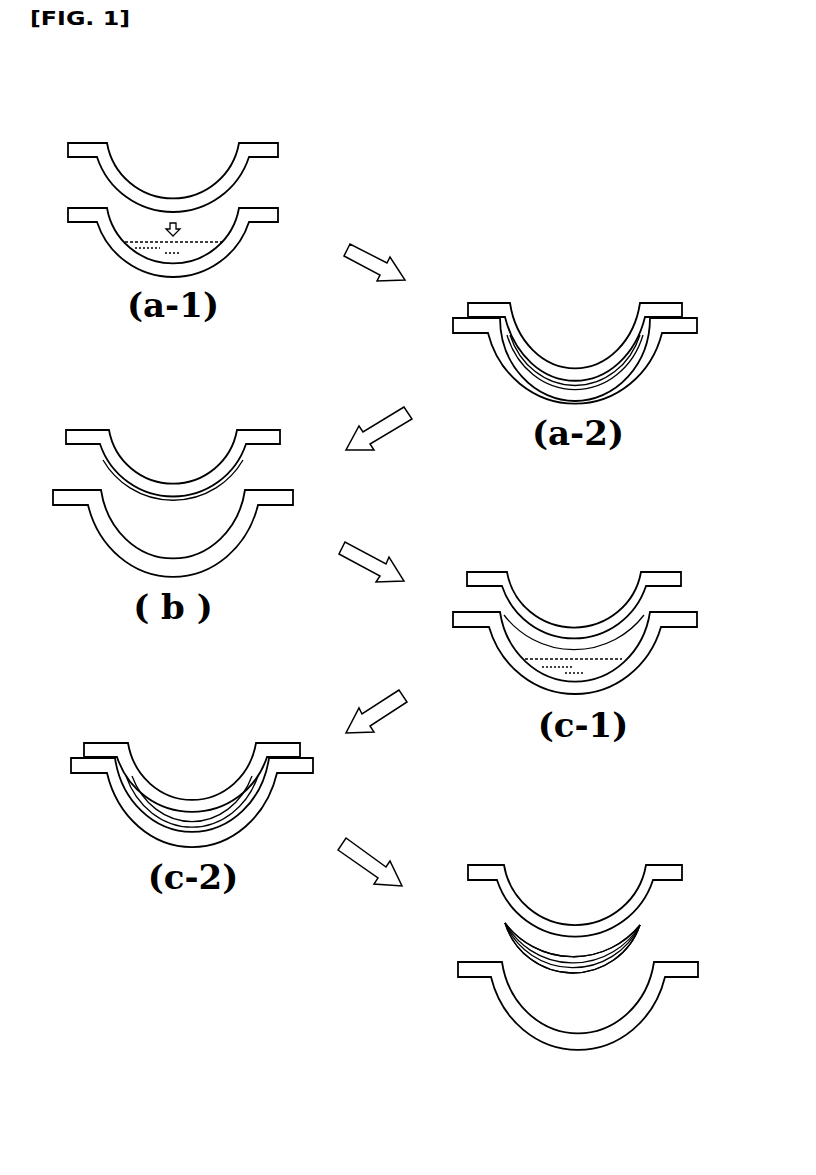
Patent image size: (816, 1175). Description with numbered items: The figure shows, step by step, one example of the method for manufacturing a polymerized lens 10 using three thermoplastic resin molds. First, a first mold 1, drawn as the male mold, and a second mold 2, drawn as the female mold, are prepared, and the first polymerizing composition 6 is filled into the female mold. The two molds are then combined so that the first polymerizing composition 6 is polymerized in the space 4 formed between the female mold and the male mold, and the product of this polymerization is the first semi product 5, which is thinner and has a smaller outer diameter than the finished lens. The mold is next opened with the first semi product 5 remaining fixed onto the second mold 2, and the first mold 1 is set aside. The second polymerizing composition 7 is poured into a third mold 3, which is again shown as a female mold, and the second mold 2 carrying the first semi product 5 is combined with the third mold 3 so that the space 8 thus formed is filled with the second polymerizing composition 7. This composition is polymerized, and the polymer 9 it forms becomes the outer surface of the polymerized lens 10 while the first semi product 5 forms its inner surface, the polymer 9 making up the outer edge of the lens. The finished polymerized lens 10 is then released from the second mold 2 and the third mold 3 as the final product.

The first mold 1 is at (246, 244).
The second mold 2 is at (257, 143).
The third mold 3 is at (523, 686).
The space 4 is at (548, 377).
The first semi product 5 is at (594, 388).
The first polymerizing composition 6 is at (214, 240).
The second polymerizing composition 7 is at (598, 670).
The space 8 is at (200, 827).
The polymer 9 is at (608, 967).
The polymerized lens 10 is at (700, 898).